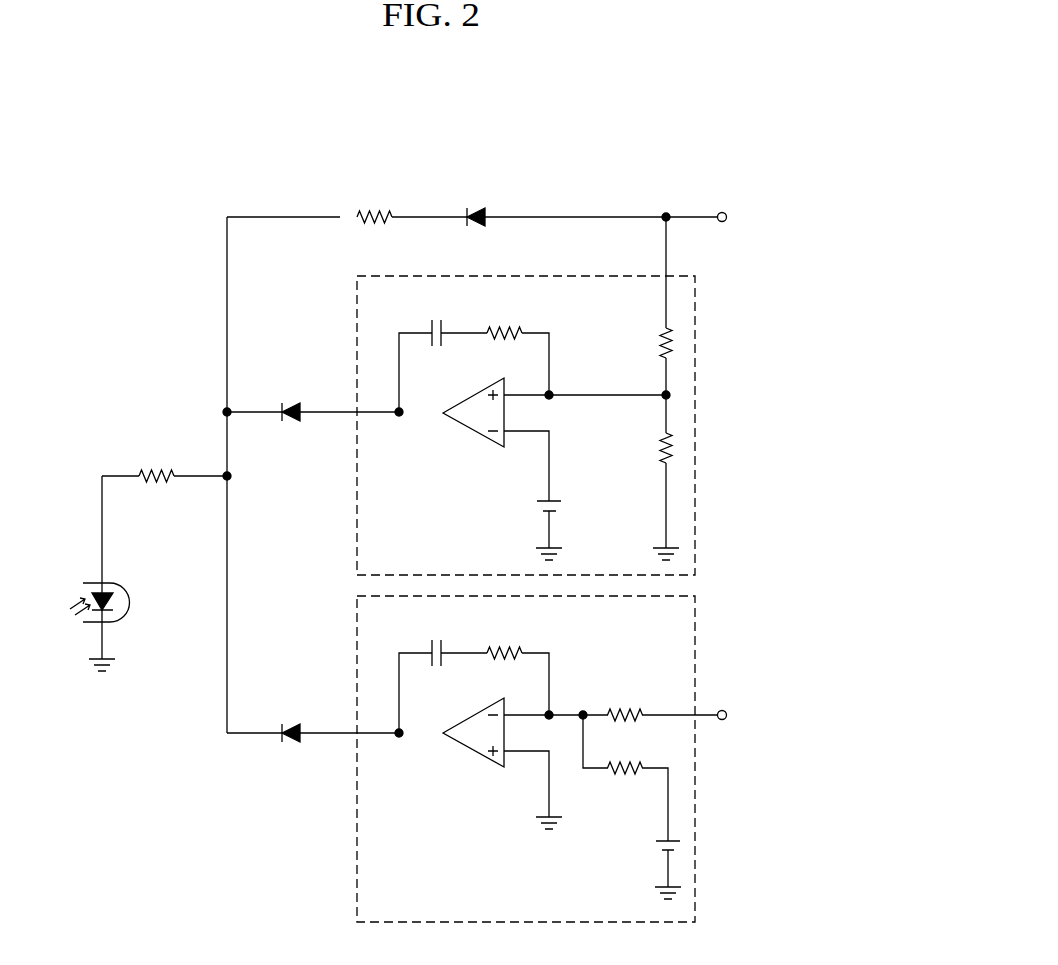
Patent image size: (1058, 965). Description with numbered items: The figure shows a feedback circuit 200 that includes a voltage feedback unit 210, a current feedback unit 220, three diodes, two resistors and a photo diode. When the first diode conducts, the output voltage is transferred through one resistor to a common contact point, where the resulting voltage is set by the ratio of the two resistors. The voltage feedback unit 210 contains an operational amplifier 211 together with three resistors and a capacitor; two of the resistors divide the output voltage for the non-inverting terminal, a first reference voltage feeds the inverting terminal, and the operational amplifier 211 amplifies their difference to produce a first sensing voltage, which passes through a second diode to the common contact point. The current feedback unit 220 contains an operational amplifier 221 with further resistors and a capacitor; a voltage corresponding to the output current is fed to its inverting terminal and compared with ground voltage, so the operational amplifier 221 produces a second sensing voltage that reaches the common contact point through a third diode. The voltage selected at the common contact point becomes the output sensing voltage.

The feedback circuit 200 is at (677, 142).
The voltage feedback unit 210 is at (553, 396).
The operational amplifier 211 is at (478, 448).
The current feedback unit 220 is at (563, 759).
The operational amplifier 221 is at (478, 758).